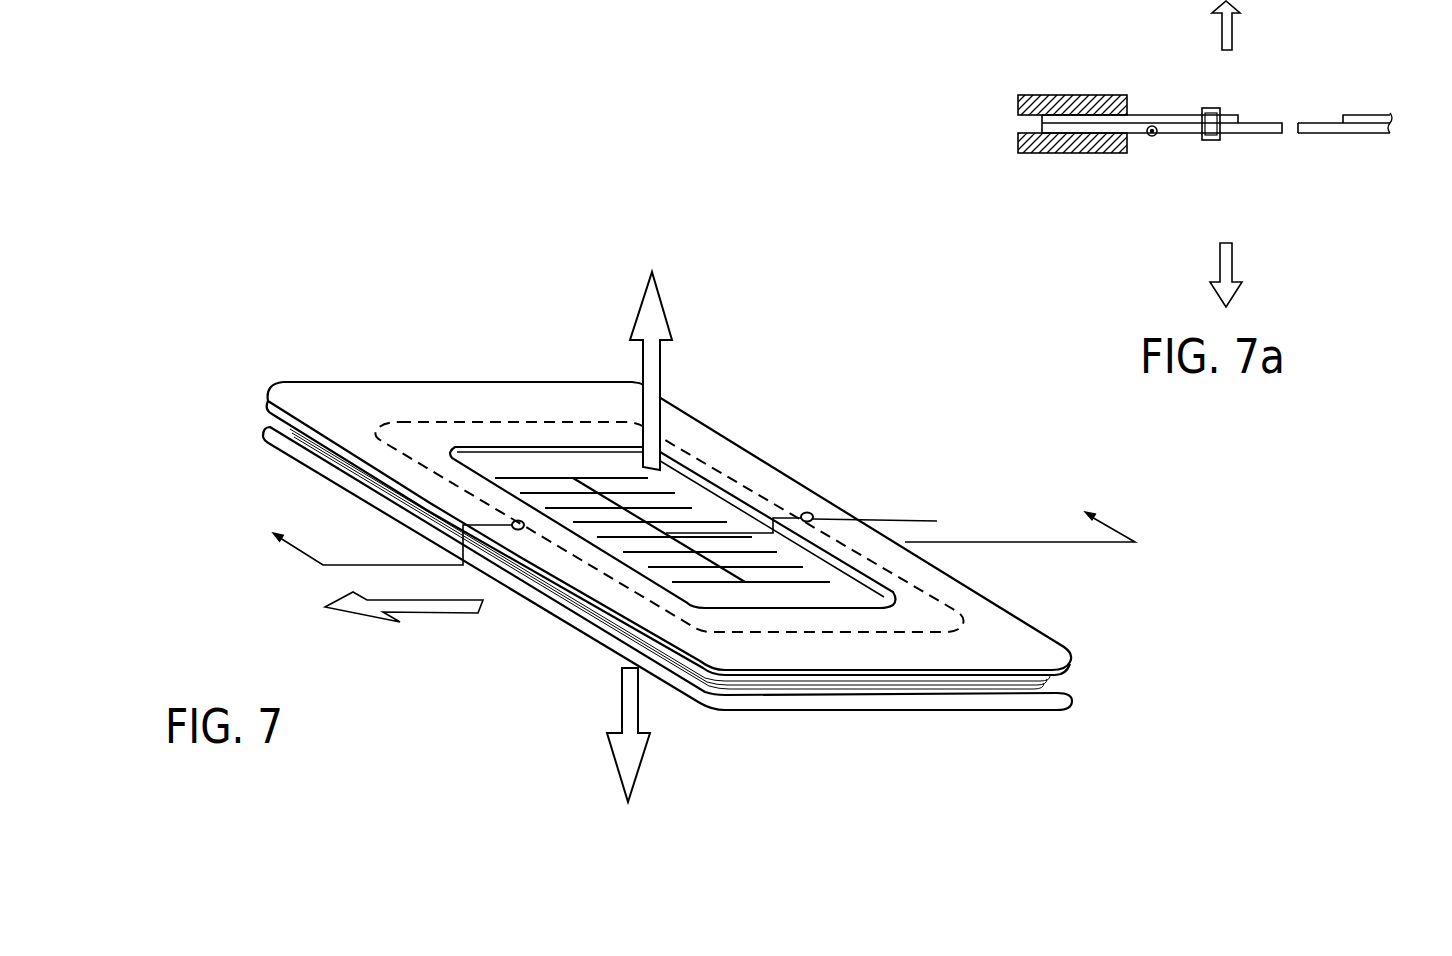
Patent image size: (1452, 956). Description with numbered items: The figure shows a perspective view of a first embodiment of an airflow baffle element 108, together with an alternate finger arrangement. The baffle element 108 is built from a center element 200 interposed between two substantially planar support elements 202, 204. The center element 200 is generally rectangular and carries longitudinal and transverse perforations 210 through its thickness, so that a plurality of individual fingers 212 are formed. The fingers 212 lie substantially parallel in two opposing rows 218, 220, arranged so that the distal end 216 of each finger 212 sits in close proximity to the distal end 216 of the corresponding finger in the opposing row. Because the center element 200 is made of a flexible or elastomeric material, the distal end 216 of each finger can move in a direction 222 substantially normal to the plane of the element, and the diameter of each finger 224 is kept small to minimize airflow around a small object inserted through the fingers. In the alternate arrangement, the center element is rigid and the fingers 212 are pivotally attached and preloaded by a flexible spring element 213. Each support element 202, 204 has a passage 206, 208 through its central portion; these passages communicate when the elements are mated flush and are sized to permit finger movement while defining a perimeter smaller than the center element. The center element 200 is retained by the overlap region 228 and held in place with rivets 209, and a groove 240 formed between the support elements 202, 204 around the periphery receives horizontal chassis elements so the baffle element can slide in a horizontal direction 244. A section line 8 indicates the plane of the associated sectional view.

In FIG. 7, the section line 8- 8 is at (695, 531).
In FIG. 7, the baffle element 108 is at (535, 666).
In FIG. 7, the center element 200 is at (497, 469).
In FIG. 7a, the center element 200 is at (1128, 136).
In FIG. 7, the support element 202 is at (266, 397).
In FIG. 7a, the support element 202 is at (1018, 96).
In FIG. 7, the support element 204 is at (266, 440).
In FIG. 7a, the support element 204 is at (1018, 146).
In FIG. 7, the passage 206 is at (870, 585).
In FIG. 7, the passage 208 is at (805, 725).
In FIG. 7, the rivets 209 is at (518, 530).
In FIG. 7, the perforations 210 is at (715, 583).
In FIG. 7, the fingers 212 is at (767, 560).
In FIG. 7a, the fingers 212 is at (1242, 135).
In FIG. 7a, the flexible spring element 213 is at (1178, 112).
In FIG. 7, the distal end 216 is at (683, 515).
In FIG. 7a, the distal end 216 is at (1298, 120).
In FIG. 7, the row 218 is at (610, 466).
In FIG. 7, the row 220 is at (562, 466).
In FIG. 7, the normal direction 222 is at (662, 320).
In FIG. 7a, the normal direction 222 is at (1234, 28).
In FIG. 7, the finger diameter 224 is at (482, 458).
In FIG. 7, the overlap region 228 is at (922, 610).
In FIG. 7, the groove 240 is at (1072, 686).
In FIG. 7, the horizontal direction 244 is at (350, 614).